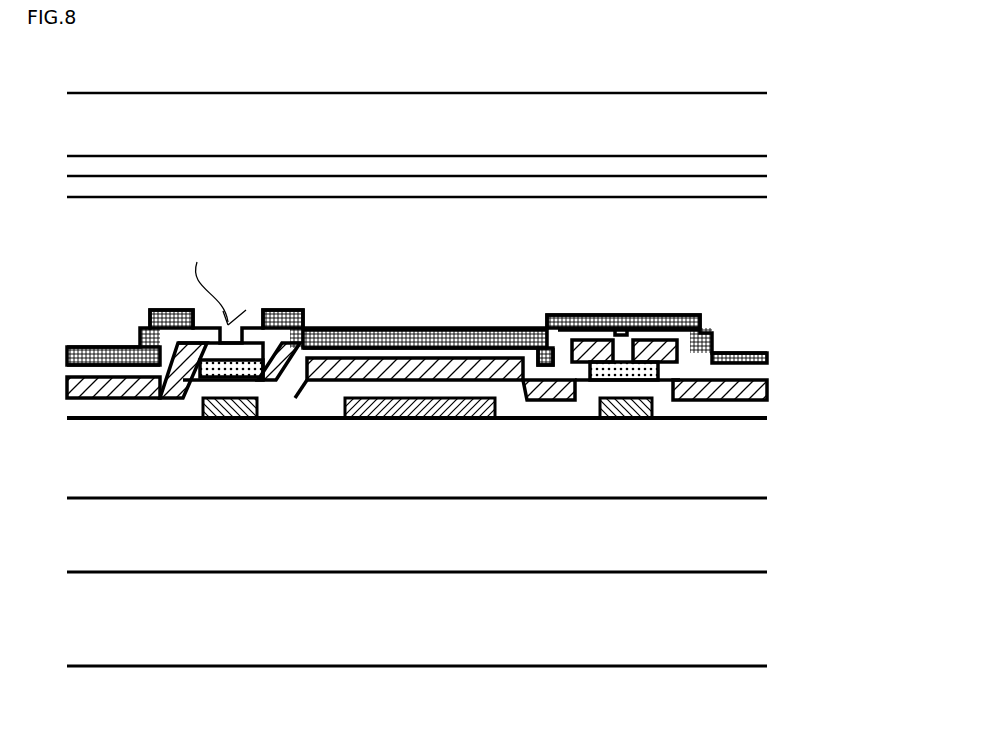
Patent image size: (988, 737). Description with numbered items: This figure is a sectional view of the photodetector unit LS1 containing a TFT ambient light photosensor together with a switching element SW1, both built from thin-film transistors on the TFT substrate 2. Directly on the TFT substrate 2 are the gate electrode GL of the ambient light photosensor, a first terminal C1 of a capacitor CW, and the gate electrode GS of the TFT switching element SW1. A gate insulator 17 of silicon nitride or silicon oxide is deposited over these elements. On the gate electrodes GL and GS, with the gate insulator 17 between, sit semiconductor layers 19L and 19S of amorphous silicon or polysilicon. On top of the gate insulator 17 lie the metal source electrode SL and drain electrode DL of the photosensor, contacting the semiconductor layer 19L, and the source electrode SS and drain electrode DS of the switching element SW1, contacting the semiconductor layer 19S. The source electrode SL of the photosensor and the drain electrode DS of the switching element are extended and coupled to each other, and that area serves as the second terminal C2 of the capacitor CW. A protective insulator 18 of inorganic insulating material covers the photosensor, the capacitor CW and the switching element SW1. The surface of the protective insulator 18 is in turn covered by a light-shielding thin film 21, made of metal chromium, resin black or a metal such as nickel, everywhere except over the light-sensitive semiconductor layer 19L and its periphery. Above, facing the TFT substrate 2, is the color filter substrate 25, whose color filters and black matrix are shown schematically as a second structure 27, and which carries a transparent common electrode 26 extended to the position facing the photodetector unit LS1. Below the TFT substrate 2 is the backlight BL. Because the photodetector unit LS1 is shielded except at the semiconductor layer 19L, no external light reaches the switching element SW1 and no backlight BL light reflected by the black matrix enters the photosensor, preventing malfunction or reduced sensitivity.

The color filter substrate 25 is at (368, 128).
The second structure 27 is at (463, 168).
The common electrode 26 is at (505, 195).
The gate insulator 17 is at (748, 413).
The protective insulator 18 is at (753, 373).
The light-shielding thin film 21 is at (470, 330).
The TFT substrate 2 is at (537, 455).
The semiconductor layer 19L is at (277, 311).
The semiconductor layer 19S is at (600, 328).
The drain electrode DL is at (150, 398).
The source electrode SL is at (338, 330).
The capacitor CW is at (410, 318).
The second terminal of the capacitor C2 is at (427, 330).
The drain electrode DS is at (545, 330).
The switching element SW1 is at (633, 296).
The source electrode SS is at (707, 340).
The gate electrode GL is at (233, 420).
The first terminal of the capacitor C1 is at (410, 420).
The gate electrode GS is at (628, 420).
The photodetector unit LS1 is at (78, 233).
The backlight BL is at (417, 582).